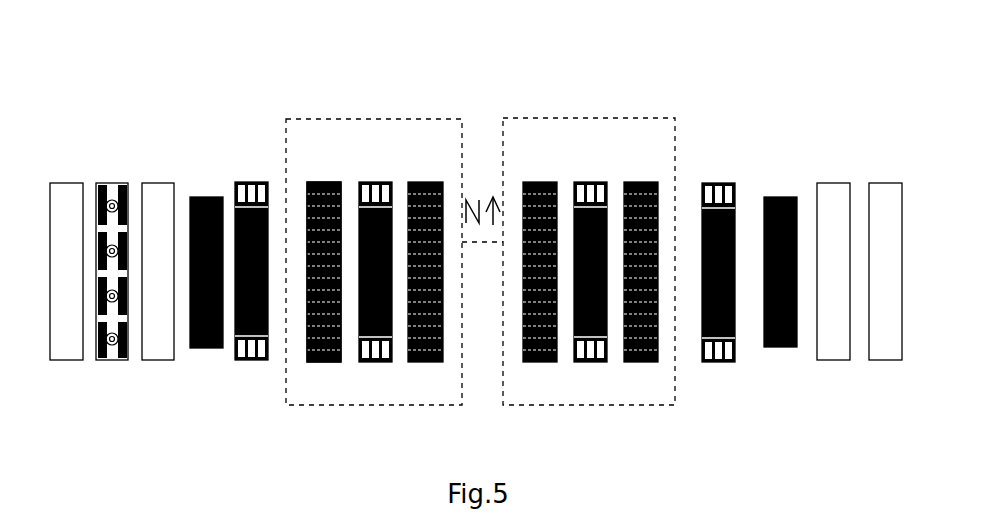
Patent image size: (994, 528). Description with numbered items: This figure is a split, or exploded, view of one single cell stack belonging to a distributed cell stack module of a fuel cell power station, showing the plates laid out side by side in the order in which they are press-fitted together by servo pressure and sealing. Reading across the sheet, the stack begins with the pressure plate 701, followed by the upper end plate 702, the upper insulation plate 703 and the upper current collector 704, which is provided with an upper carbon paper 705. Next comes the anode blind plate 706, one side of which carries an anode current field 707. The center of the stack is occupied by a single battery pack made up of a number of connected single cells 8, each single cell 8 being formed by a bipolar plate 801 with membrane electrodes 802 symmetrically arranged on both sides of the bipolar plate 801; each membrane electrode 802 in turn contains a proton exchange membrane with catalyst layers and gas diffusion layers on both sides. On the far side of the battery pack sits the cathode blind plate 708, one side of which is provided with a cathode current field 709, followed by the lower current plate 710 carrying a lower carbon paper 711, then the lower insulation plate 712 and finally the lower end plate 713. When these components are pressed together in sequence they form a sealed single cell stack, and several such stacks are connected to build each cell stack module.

The single cell 8 is at (480, 215).
The bipolar plate 801 is at (389, 220).
The membrane electrode 802 is at (338, 218).
The pressure plate 701 is at (57, 243).
The upper end plate 702 is at (102, 240).
The upper insulation plate 703 is at (147, 240).
The upper current collector 704 is at (195, 242).
The upper carbon paper 705 is at (242, 244).
The anode blind plate 706 is at (195, 356).
The anode current field 707 is at (240, 361).
The cathode blind plate 708 is at (705, 235).
The cathode current field 709 is at (732, 172).
The lower current plate 710 is at (793, 229).
The lower carbon paper 711 is at (768, 360).
The lower insulation plate 712 is at (847, 230).
The lower end plate 713 is at (899, 230).